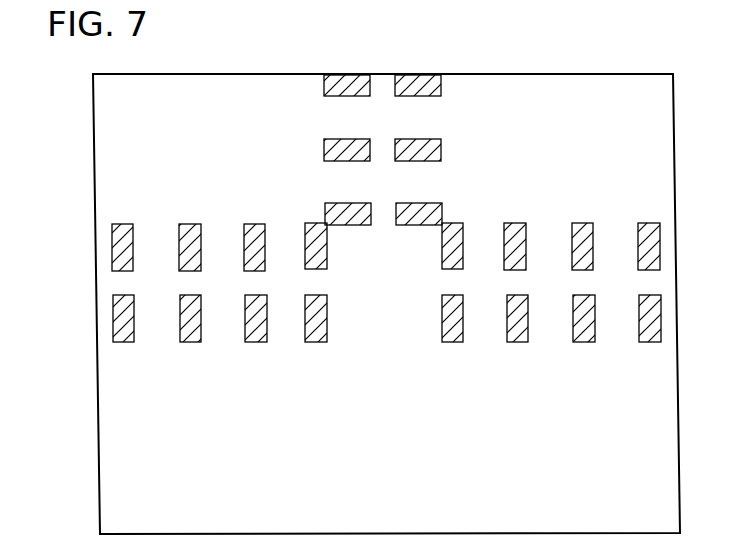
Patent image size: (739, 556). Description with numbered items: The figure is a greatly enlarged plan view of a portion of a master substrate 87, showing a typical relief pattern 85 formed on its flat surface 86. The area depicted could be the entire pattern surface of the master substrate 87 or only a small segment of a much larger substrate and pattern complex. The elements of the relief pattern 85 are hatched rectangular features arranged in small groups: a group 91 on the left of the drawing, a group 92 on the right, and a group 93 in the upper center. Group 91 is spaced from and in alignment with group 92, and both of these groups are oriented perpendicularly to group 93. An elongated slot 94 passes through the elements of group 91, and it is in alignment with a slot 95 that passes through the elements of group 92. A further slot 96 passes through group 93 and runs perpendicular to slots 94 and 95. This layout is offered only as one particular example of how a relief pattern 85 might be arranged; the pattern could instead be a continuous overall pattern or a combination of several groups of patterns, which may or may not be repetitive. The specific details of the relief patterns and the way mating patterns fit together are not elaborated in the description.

The relief pattern 85 is at (356, 368).
The flat surface 86 is at (571, 145).
The master substrate 87 is at (606, 62).
The group 91 is at (187, 218).
The group 92 is at (517, 218).
The group 93 is at (452, 145).
The elongated slot 94 is at (320, 278).
The slot 95 is at (446, 278).
The slot 96 is at (386, 228).